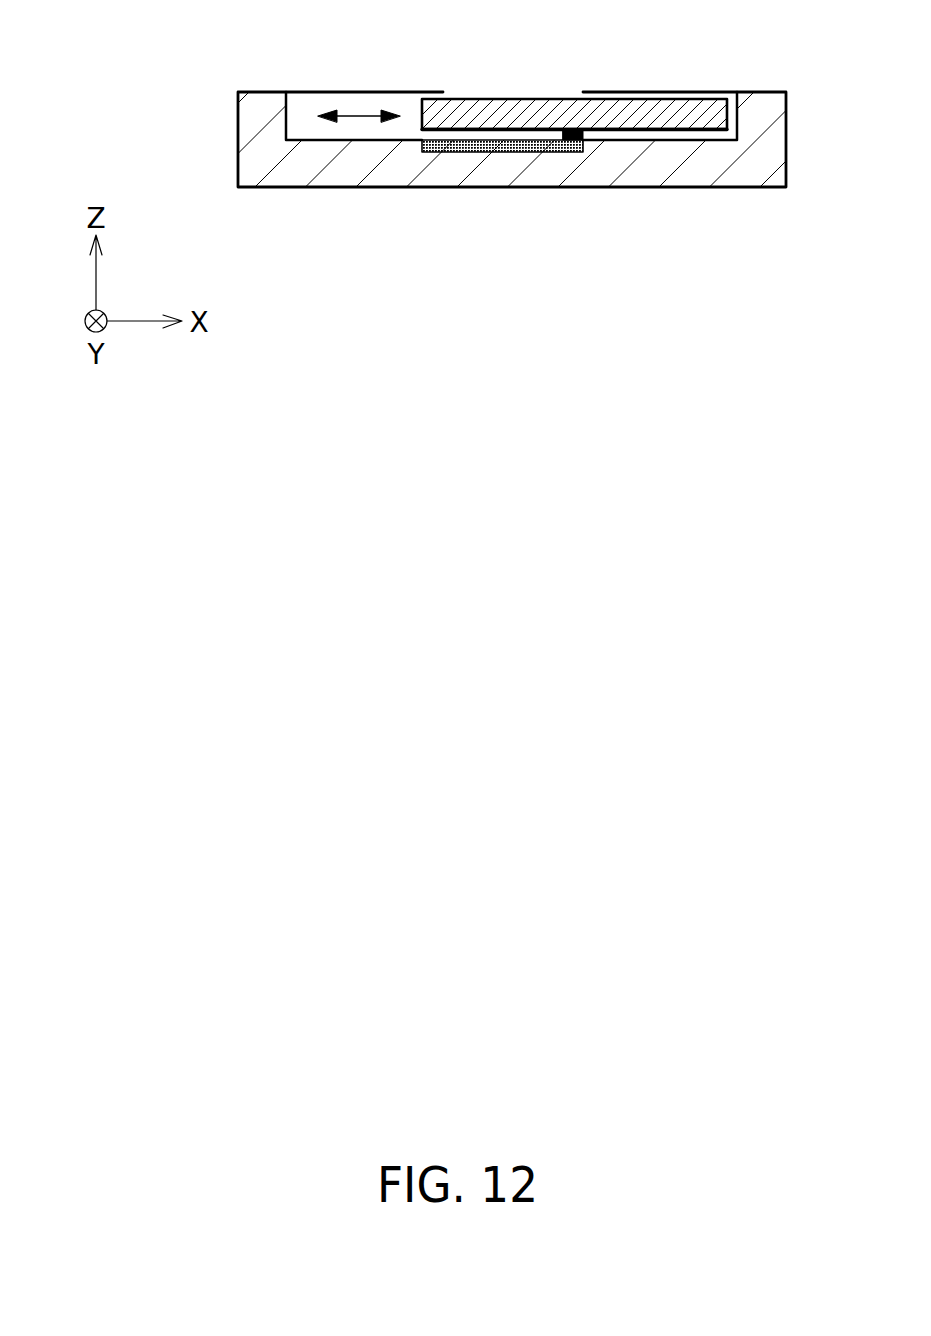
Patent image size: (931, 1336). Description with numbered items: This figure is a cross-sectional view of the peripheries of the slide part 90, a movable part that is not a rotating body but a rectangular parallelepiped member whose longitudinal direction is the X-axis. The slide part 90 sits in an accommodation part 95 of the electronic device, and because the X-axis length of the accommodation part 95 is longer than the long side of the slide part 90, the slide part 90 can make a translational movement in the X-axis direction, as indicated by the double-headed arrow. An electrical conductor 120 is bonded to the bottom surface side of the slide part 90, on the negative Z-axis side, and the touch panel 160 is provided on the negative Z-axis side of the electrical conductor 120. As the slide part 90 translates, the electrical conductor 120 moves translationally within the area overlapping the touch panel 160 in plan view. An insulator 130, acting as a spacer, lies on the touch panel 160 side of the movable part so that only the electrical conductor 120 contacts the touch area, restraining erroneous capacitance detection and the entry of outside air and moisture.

The accommodation part 95 is at (391, 94).
The slide part 90 is at (523, 98).
The electrical conductor 120 is at (578, 141).
The insulator 130 is at (667, 133).
The touch panel 160 is at (503, 153).